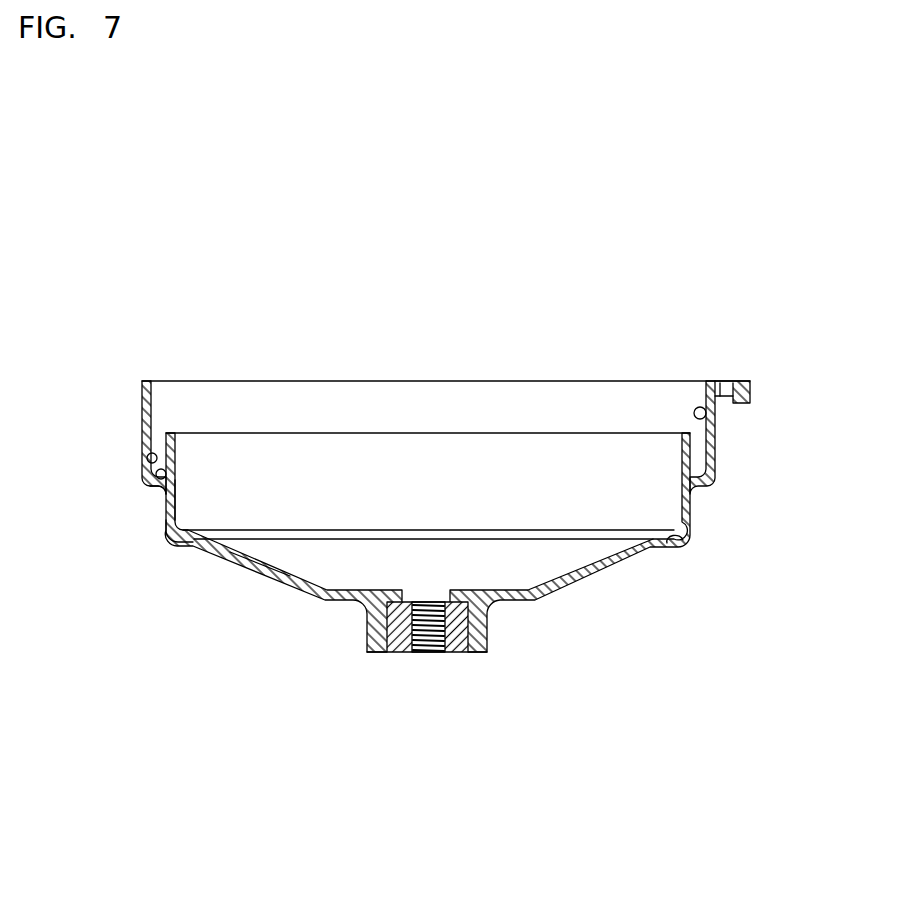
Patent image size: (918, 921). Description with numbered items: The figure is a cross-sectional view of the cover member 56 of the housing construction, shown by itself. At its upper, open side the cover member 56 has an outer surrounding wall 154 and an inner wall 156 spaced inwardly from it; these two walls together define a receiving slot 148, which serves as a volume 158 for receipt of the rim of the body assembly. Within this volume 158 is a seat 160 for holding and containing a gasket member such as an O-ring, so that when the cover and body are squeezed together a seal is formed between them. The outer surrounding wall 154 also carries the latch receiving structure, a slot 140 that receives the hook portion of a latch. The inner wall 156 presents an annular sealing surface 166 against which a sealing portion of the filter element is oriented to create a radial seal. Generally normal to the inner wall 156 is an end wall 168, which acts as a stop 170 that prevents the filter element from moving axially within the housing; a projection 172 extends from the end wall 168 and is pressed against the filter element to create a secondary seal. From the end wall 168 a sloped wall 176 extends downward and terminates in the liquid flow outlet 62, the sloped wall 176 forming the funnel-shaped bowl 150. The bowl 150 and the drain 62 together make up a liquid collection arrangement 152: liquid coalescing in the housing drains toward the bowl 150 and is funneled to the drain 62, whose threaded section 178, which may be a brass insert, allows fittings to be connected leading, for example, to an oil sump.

The cover member 56 is at (231, 322).
The slot 140 is at (740, 383).
The outer surrounding wall 154 is at (142, 397).
The inner wall 156 is at (175, 450).
The volume 158 is at (717, 425).
The receiving slot 148 is at (151, 466).
The annular sealing surface 166 is at (175, 500).
The projection 172 is at (200, 528).
The seat 160 is at (167, 483).
The end wall 168 is at (183, 545).
The stop 170 is at (689, 531).
The sloped wall 176 is at (255, 569).
The bowl 150 is at (583, 577).
The threaded section 178 is at (413, 653).
The liquid flow outlet 62 is at (440, 653).
The liquid collection arrangement 152 is at (557, 662).